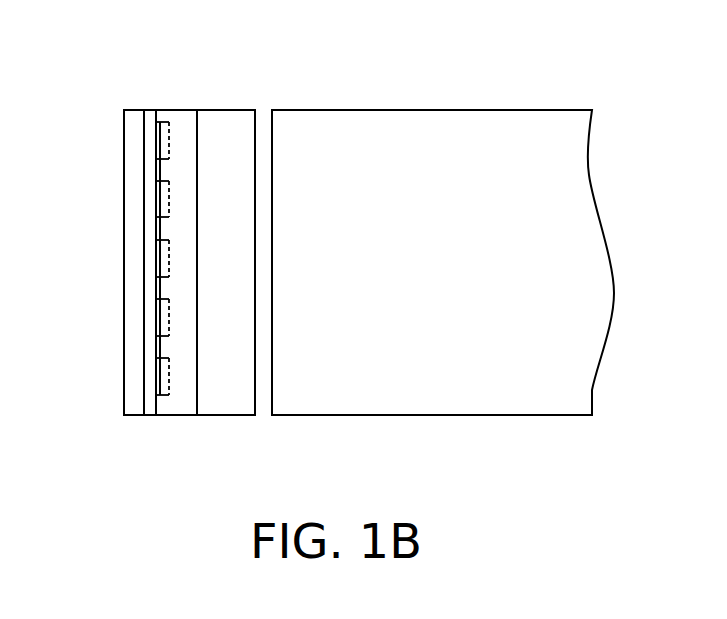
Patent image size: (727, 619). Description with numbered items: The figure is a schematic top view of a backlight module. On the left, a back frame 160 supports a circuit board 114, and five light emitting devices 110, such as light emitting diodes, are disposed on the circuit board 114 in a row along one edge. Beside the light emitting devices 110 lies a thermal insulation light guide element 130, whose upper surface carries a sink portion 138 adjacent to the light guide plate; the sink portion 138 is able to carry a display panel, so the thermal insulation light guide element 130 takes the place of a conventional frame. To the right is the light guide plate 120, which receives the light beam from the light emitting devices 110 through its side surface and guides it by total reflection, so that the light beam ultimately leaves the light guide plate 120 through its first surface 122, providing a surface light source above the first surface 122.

The light emitting device 110 is at (159, 122).
The circuit board 114 is at (150, 120).
The light guide plate 120 is at (595, 281).
The first surface 122 is at (501, 153).
The thermal insulation light guide element 130 is at (257, 431).
The sink portion 138 is at (233, 153).
The back frame 160 is at (133, 210).